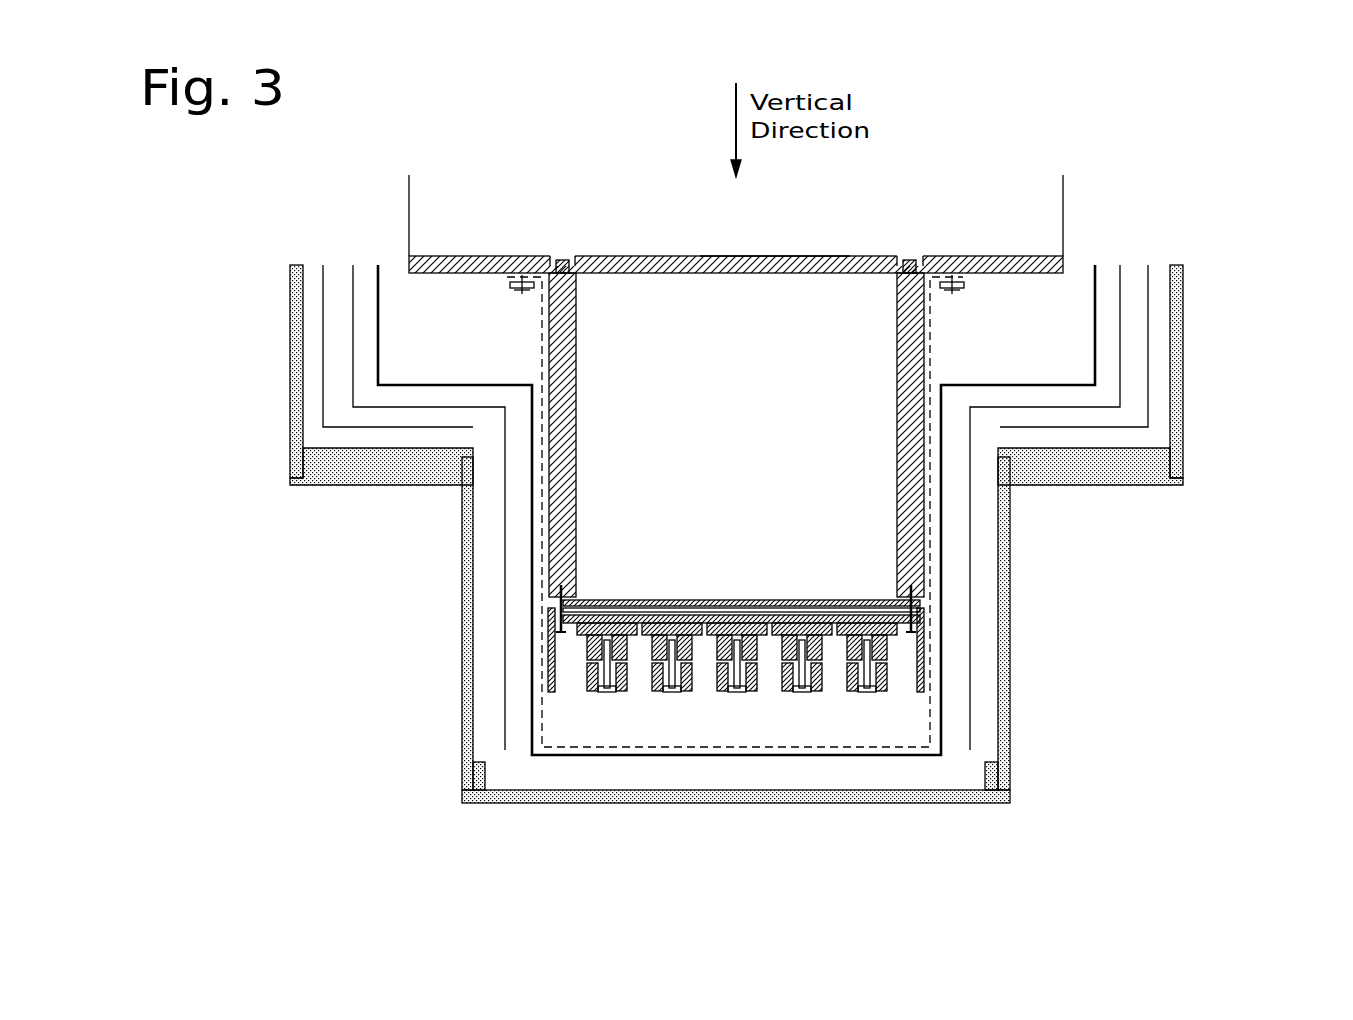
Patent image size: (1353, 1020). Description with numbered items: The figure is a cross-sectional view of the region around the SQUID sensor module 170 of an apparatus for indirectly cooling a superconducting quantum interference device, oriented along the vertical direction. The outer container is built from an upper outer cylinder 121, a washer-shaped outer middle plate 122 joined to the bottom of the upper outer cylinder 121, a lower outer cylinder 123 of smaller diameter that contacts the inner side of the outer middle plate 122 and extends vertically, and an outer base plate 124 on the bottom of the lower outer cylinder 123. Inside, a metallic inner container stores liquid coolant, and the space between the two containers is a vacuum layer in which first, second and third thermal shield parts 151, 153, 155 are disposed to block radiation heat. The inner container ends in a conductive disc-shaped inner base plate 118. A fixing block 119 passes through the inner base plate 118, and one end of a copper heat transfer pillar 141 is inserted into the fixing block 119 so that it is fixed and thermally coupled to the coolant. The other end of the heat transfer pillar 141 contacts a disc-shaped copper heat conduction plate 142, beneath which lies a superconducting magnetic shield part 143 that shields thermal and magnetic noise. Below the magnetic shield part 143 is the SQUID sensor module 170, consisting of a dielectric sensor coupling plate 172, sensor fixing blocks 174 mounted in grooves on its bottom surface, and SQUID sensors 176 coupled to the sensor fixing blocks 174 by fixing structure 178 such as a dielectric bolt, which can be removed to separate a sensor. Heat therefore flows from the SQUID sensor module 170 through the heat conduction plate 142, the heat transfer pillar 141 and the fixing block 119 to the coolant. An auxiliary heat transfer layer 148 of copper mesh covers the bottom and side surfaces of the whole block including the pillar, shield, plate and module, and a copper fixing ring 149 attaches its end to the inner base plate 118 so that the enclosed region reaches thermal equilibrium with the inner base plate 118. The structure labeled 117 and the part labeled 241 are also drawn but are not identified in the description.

The upper chamber / plate 117 is at (410, 207).
The inner base plate 118 is at (770, 256).
The fixing block 119 is at (913, 256).
The fixing ring 149 is at (522, 284).
The upper outer cylinder 121 is at (290, 415).
The outer middle plate 122 is at (372, 487).
The lower outer cylinder 123 is at (462, 653).
The outer base plate 124 is at (510, 803).
The heat transfer pillar 141 is at (578, 345).
The heat conduction plate 142 is at (810, 603).
The magnetic shield part 143 is at (718, 608).
The auxiliary heat transfer layer 148 is at (933, 333).
The first thermal shield part 151 is at (378, 297).
The second thermal shield part 153 is at (353, 333).
The third thermal shield part 155 is at (323, 370).
The SQUID sensor module 170 is at (741, 763).
The sensor coupling plate 172 is at (612, 600).
The sensor fixing block 174 is at (845, 650).
The SQUID sensor 176 is at (785, 690).
The fixing structure 178 is at (730, 692).
The fixing pin 241 is at (558, 637).